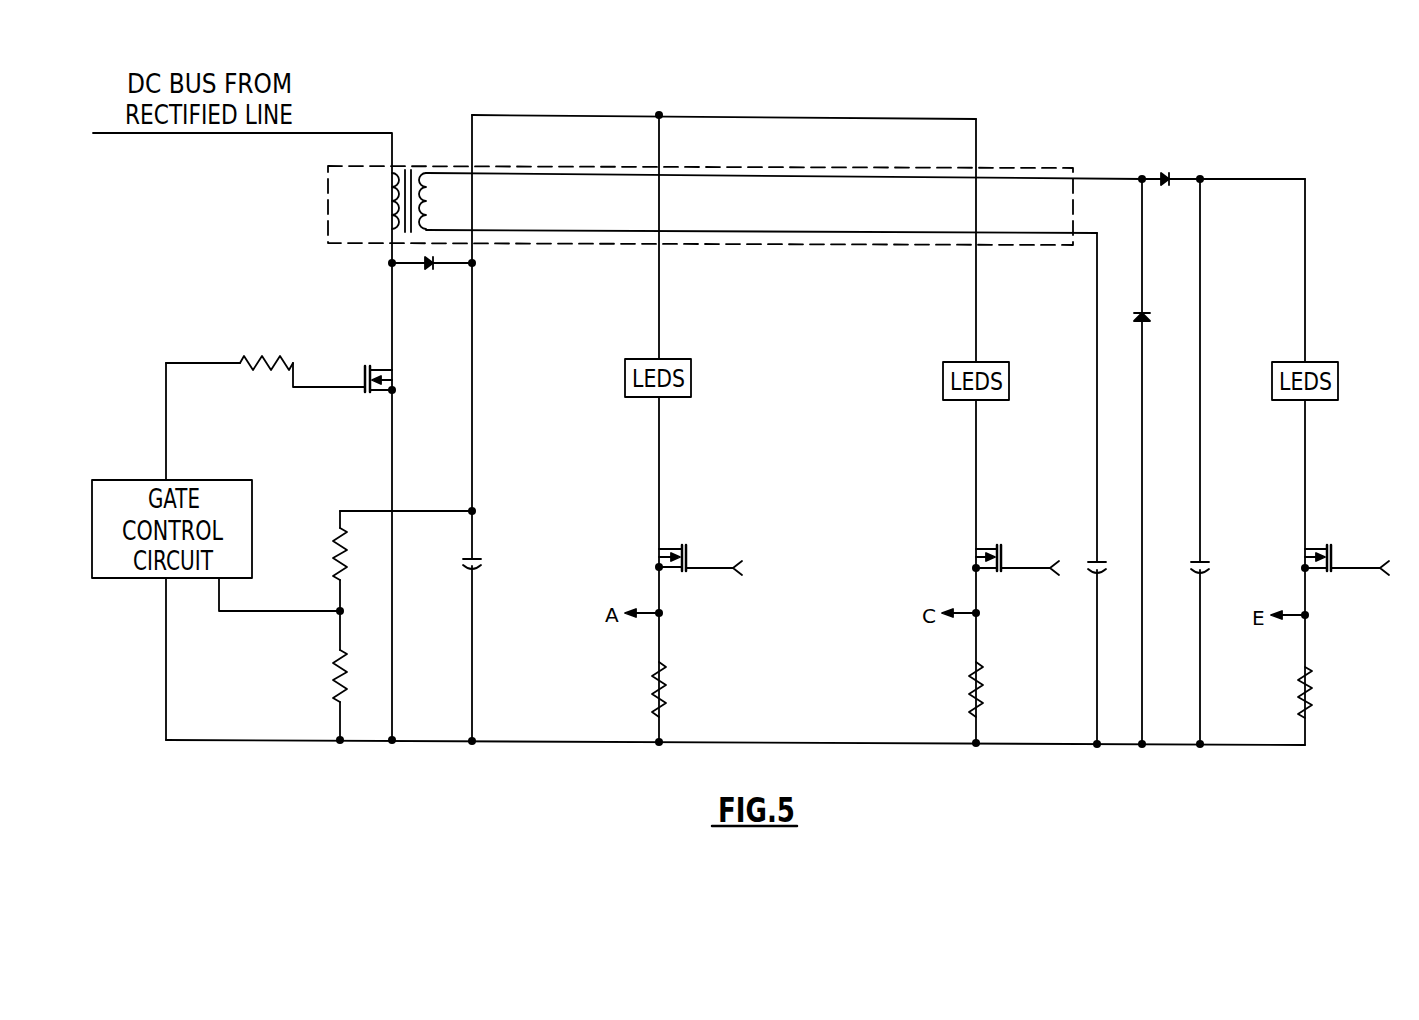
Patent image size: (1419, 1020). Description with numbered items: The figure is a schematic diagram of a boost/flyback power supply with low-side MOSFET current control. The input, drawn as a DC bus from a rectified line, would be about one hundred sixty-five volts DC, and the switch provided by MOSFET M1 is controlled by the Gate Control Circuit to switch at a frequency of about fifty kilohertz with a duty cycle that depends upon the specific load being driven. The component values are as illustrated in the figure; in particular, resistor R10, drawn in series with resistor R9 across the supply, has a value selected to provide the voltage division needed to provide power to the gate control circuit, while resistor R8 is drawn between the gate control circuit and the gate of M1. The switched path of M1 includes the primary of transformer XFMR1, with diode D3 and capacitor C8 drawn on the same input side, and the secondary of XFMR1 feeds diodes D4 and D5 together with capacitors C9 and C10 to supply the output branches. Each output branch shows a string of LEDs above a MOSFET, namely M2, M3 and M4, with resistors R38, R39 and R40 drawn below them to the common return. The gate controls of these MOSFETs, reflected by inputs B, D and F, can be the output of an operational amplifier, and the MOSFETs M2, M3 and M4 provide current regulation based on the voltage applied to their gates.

The gate resistor 100 ohm R8 is at (265, 340).
The MOSFET M1 is at (397, 379).
The transformer XFMR1 is at (700, 205).
The diode EGP10G D3 is at (428, 268).
The diode EGP10G D4 is at (1216, 150).
The diode EGP10G D5 is at (1135, 318).
The resistor 470K R9 is at (372, 561).
The resistor R10 is at (312, 675).
The capacitor 22uF C8 is at (498, 560).
The capacitor 0.01uF C9 is at (1092, 560).
The capacitor 10uF C10 is at (1239, 564).
The LED string MOSFET M2 is at (710, 562).
The LED string MOSFET M3 is at (1026, 564).
The LED string MOSFET M4 is at (1355, 566).
The sense resistor 10 ohm R38 is at (632, 692).
The sense resistor 10 ohm R39 is at (949, 692).
The sense resistor 10 ohm R40 is at (1278, 695).